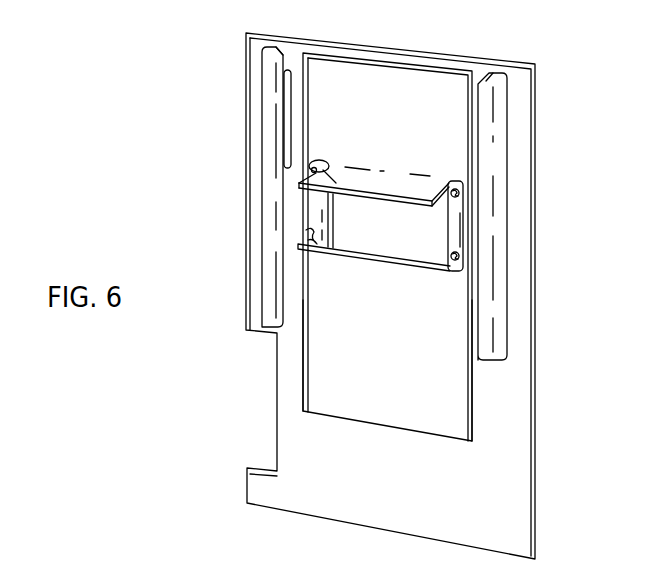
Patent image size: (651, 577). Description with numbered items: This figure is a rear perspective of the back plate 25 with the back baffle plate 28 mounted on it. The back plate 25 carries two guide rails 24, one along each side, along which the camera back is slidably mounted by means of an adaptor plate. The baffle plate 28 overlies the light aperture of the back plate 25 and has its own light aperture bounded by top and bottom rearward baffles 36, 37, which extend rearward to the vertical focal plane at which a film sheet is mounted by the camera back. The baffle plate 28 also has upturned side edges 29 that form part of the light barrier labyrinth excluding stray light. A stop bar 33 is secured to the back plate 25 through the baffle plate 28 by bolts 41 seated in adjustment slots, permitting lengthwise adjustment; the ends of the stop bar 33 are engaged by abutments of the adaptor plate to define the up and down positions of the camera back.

The guide rail 24 is at (498, 147).
The back plate 25 is at (522, 482).
The back baffle plate 28 is at (347, 395).
The upturned side edge 29 is at (305, 388).
The stop bar 33 is at (460, 241).
The top rearward baffle 36 is at (312, 166).
The bottom rearward baffle 37 is at (425, 270).
The bolt 41 is at (458, 196).